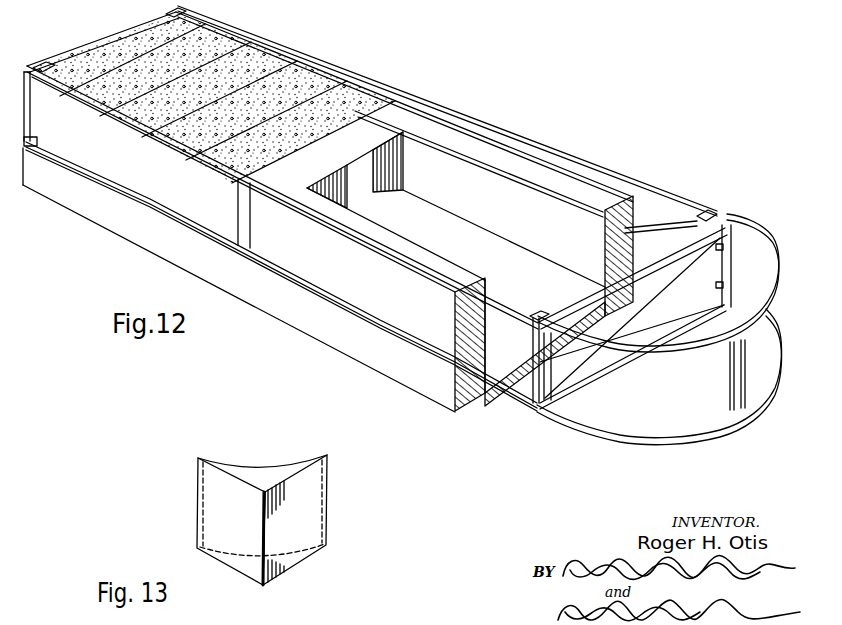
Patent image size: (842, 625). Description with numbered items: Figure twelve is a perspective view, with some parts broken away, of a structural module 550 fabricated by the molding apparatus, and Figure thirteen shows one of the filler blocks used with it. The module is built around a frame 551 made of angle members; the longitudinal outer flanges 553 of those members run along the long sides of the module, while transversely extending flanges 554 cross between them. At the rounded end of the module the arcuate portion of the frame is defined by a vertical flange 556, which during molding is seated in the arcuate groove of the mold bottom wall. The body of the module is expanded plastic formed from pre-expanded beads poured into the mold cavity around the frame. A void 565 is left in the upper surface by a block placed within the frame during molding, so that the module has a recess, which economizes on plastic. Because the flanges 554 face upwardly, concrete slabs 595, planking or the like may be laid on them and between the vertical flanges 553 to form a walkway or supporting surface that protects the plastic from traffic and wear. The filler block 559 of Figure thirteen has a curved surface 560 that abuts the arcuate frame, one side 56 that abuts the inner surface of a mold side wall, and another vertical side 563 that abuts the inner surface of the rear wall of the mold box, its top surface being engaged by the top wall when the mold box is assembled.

In FIG. 12, the structural module 550 is at (114, 239).
In FIG. 12, the module frame 551 is at (563, 155).
In FIG. 12, the longitudinal outer flanges 553 is at (606, 180).
In FIG. 12, the transverse flanges 554 is at (110, 24).
In FIG. 12, the arcuate vertical flange 556 is at (693, 349).
In FIG. 12, the void 565 is at (466, 168).
In FIG. 12, the concrete slabs 595 is at (322, 68).
In FIG. 13, the prism side panel 56 is at (200, 490).
In FIG. 13, the filler block 559 is at (309, 488).
In FIG. 13, the curved surface 560 is at (256, 466).
In FIG. 13, the vertical side 563 is at (313, 515).